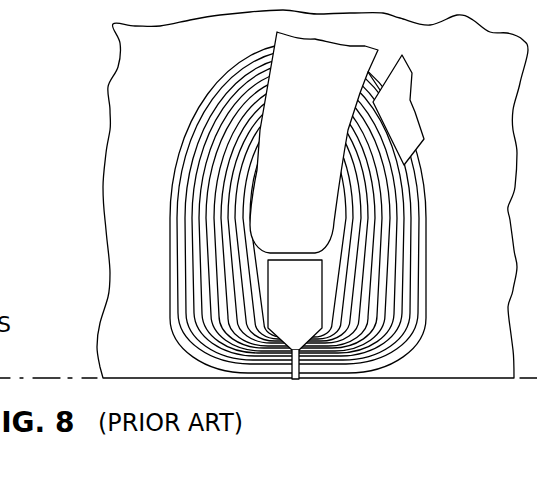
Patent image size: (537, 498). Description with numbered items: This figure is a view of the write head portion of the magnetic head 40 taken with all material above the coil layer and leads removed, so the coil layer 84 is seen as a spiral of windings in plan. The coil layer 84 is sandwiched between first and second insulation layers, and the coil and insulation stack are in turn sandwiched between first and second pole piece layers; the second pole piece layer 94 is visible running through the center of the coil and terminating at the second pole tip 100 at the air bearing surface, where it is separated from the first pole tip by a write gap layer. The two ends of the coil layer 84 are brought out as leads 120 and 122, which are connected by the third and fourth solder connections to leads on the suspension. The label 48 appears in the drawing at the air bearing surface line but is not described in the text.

The magnetic head 40 is at (432, 192).
The coil layer 84 is at (393, 280).
The lead 120 is at (320, 140).
The lead 122 is at (412, 98).
The second pole piece layer 94 is at (305, 308).
The second pole tip 100 is at (295, 380).
The axis 48 is at (45, 378).